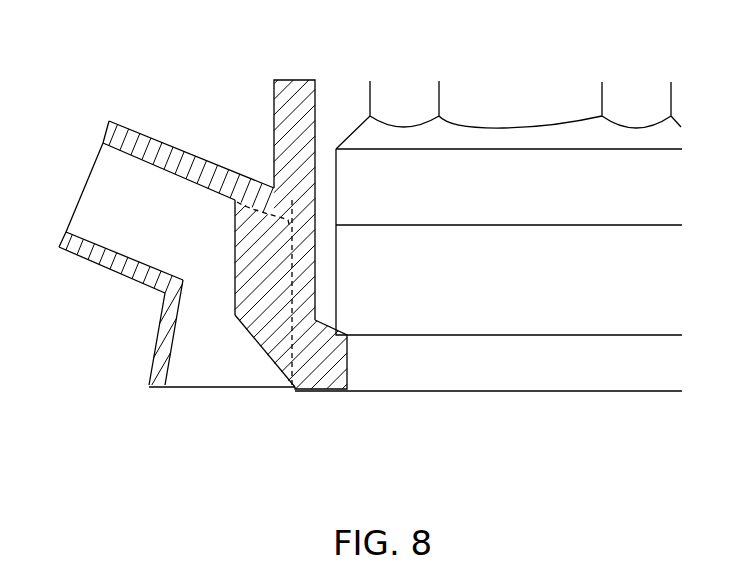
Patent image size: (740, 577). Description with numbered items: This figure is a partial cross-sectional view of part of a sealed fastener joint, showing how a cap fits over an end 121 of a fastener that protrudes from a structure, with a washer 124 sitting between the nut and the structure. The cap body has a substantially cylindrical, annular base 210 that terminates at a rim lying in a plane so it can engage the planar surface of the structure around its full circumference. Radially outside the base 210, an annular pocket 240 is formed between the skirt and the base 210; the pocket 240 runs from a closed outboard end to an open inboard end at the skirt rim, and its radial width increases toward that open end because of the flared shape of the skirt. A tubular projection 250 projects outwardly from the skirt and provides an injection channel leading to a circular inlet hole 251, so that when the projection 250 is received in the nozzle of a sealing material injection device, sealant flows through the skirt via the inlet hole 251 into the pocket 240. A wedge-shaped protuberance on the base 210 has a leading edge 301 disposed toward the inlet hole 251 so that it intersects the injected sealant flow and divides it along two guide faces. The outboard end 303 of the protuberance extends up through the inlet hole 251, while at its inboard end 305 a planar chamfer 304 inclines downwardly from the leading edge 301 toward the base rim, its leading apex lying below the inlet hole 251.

The end of the fastener 121 is at (567, 137).
The washer 124 is at (529, 370).
The base 210 is at (317, 132).
The annular pocket 240 is at (203, 373).
The tubular projection 250 is at (137, 140).
The inlet hole 251 is at (197, 239).
The leading edge 301 is at (232, 285).
The outboard end of the protuberance 303 is at (253, 207).
The chamfer 304 is at (268, 350).
The inboard end of the protuberance 305 is at (280, 345).